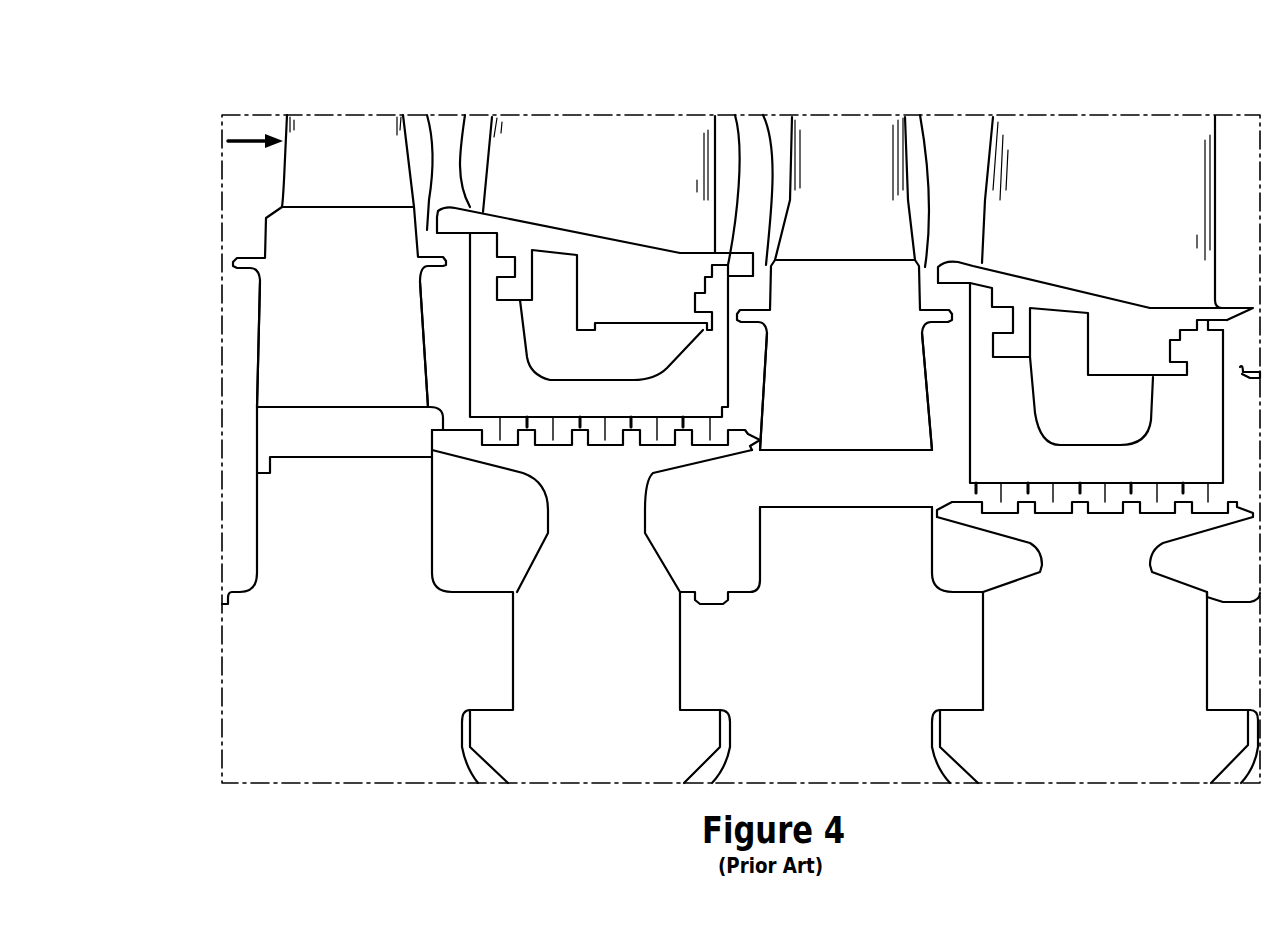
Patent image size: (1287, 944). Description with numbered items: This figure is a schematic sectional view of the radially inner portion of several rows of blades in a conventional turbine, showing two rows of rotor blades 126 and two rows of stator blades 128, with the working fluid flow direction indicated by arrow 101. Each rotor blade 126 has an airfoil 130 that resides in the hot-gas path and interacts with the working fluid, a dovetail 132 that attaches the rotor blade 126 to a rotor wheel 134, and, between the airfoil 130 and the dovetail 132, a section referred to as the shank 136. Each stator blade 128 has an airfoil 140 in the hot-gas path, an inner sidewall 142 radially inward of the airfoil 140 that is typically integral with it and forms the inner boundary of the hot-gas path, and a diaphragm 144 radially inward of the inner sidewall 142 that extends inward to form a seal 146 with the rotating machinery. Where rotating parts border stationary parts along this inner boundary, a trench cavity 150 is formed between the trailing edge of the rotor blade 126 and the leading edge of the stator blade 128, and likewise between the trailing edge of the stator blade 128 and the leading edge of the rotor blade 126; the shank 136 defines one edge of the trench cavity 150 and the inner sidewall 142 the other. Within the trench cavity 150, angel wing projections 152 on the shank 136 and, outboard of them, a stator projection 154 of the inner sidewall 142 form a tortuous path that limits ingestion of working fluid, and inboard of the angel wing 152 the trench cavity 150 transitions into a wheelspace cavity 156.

The arrow 101 is at (244, 140).
The rotor blade 126 is at (351, 98).
The stator blade 128 is at (592, 98).
The airfoil 130 is at (368, 170).
The dovetail 132 is at (360, 444).
The rotor wheel 134 is at (352, 544).
The shank 136 is at (352, 316).
The airfoil 140 is at (620, 191).
The inner sidewall 142 is at (650, 297).
The diaphragm 144 is at (712, 407).
The seal 146 is at (587, 430).
The trench cavity 150 is at (428, 130).
The angel wing projection 152 is at (423, 270).
The stator projection 154 is at (457, 127).
The wheelspace cavity 156 is at (442, 343).